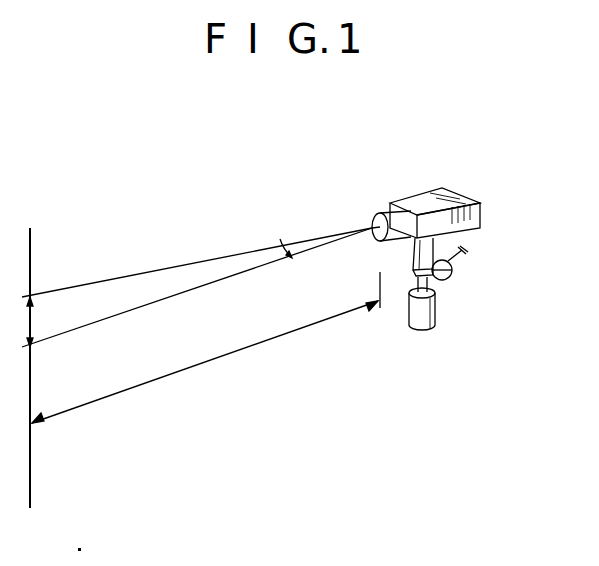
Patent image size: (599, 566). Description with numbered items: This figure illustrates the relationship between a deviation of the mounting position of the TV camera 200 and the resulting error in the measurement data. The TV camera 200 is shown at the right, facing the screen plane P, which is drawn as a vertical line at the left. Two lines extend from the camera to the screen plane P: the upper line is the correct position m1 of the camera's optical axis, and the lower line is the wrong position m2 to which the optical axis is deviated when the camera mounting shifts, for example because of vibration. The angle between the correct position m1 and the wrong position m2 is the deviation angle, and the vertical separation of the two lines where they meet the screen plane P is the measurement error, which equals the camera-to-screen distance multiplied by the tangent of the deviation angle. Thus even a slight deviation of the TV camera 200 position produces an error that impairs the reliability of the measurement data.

The TV camera 200 is at (482, 212).
The screen plane P is at (32, 253).
The correct position of optical axis m1 is at (197, 262).
The wrong position of optical axis m2 is at (197, 287).